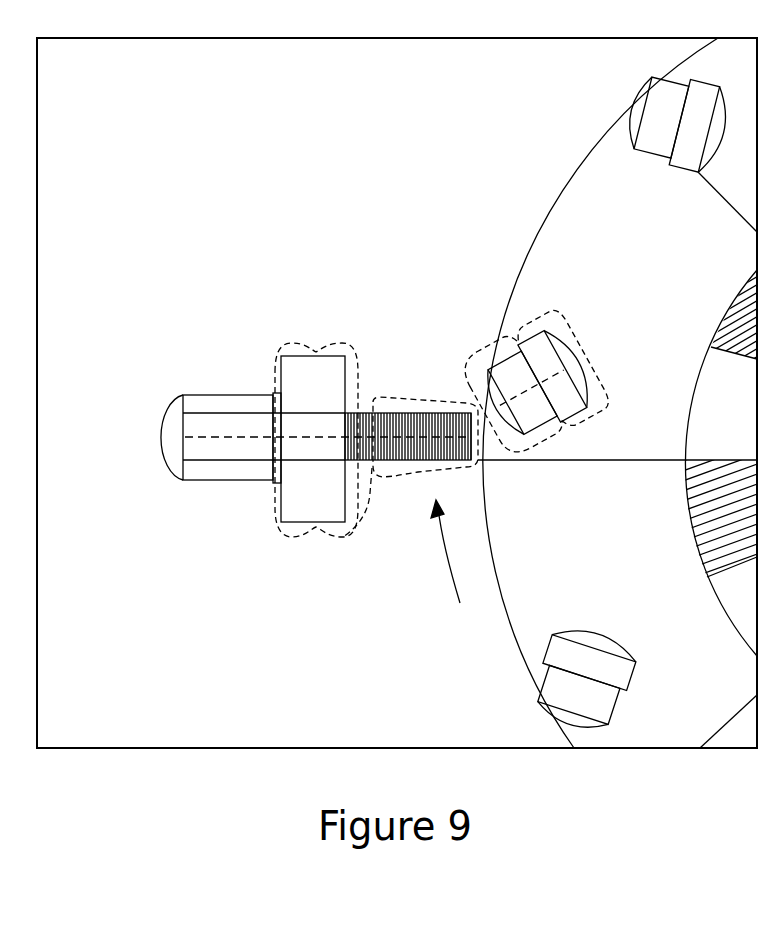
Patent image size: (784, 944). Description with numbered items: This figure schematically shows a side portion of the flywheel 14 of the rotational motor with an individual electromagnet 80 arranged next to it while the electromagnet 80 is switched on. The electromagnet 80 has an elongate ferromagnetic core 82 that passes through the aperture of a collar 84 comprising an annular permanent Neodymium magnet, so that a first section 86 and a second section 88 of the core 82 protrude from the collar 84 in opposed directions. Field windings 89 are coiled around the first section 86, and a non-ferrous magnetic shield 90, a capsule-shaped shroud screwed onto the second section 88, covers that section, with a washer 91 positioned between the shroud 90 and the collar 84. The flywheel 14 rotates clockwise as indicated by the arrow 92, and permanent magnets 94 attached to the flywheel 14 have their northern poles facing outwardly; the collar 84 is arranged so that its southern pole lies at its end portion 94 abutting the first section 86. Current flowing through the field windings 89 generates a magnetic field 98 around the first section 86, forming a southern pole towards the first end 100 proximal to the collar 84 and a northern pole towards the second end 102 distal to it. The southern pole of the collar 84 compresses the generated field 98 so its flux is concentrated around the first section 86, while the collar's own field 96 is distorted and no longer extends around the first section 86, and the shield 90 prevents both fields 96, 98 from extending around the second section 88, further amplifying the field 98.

The flywheel 14 is at (646, 264).
The electromagnet 80 is at (218, 313).
The elongate core 82 is at (230, 440).
The collar 84 is at (315, 372).
The first section 86 is at (412, 413).
The second section 88 is at (202, 427).
The field windings 89 is at (460, 465).
The magnetic shield 90 is at (157, 440).
The washer 91 is at (275, 395).
The arrow 92 is at (432, 551).
The permanent magnet 94 is at (567, 410).
The magnetic field of the collar 96 is at (343, 537).
The generated magnetic field 98 is at (410, 473).
The first end 100 is at (362, 397).
The second end 102 is at (451, 408).